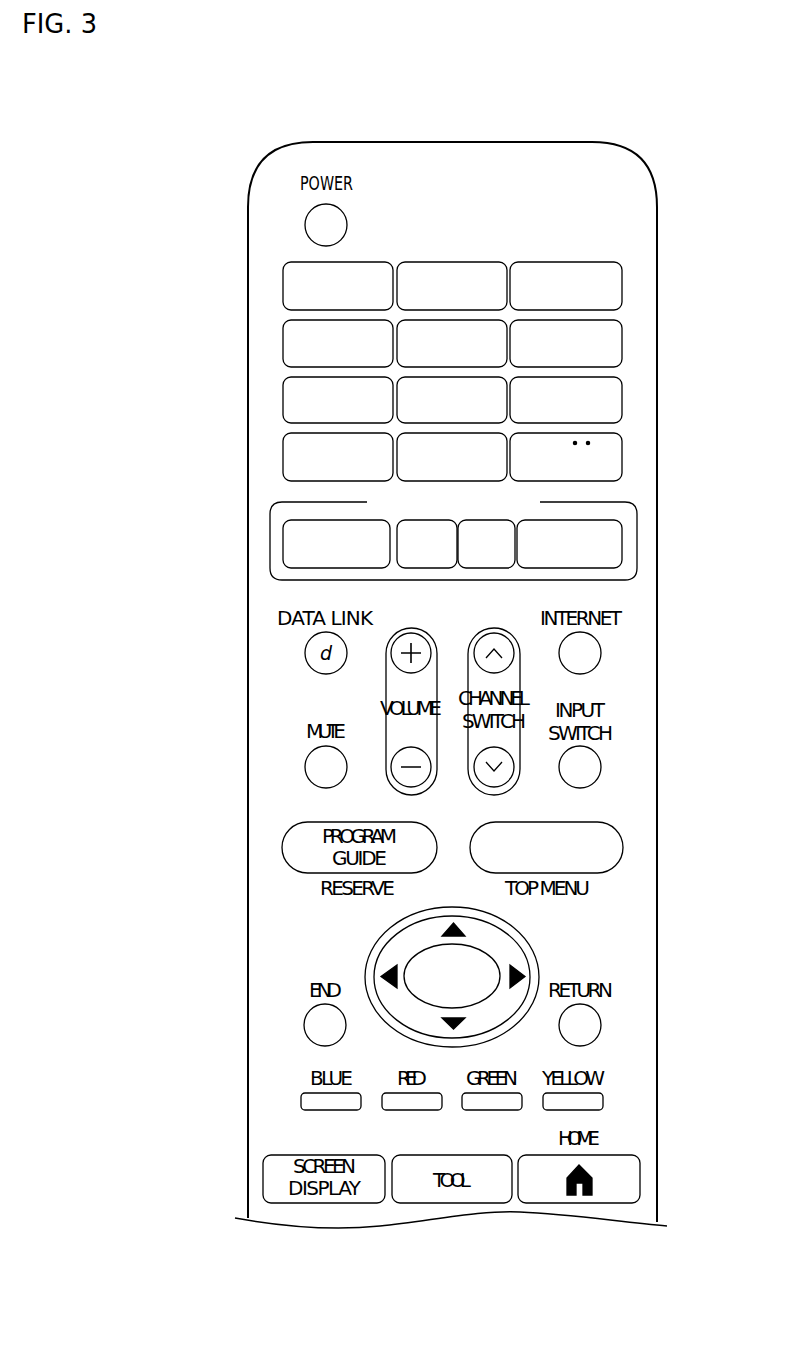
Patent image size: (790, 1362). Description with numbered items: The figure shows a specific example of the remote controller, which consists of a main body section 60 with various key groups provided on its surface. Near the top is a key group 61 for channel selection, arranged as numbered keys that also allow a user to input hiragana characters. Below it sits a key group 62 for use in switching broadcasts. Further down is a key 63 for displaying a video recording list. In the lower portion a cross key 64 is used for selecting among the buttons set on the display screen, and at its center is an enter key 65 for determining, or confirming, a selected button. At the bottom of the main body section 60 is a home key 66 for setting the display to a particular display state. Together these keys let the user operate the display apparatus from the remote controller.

The main body section 60 is at (657, 236).
The key group for channel selection 61 is at (625, 262).
The key group for switching broadcasts 62 is at (628, 542).
The key for displaying a video recording list 63 is at (623, 848).
The cross key 64 is at (523, 957).
The enter key 65 is at (422, 958).
The home key 66 is at (640, 1178).